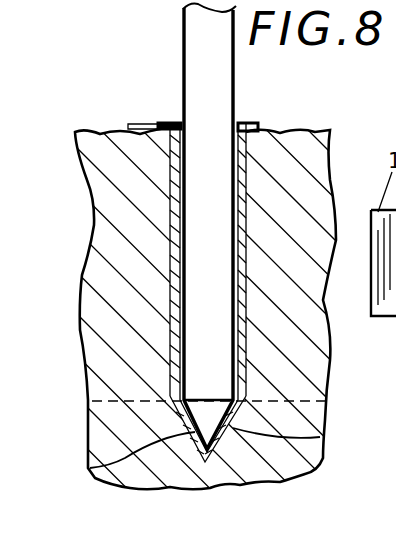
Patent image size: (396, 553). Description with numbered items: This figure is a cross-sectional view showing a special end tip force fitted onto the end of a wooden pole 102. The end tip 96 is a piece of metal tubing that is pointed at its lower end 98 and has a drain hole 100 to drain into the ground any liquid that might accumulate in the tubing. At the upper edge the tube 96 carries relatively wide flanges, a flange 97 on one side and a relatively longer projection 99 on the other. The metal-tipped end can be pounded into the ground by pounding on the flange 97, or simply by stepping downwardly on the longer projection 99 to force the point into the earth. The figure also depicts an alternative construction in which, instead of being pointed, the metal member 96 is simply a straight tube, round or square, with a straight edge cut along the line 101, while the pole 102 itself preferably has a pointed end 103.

The end tip 96 is at (247, 188).
The flange 97 is at (247, 124).
The lower end 98 is at (320, 437).
The projection 99 is at (153, 118).
The drain hole 100 is at (90, 468).
The line 101 is at (95, 396).
The pole 102 is at (237, 67).
The pointed end 103 is at (212, 447).